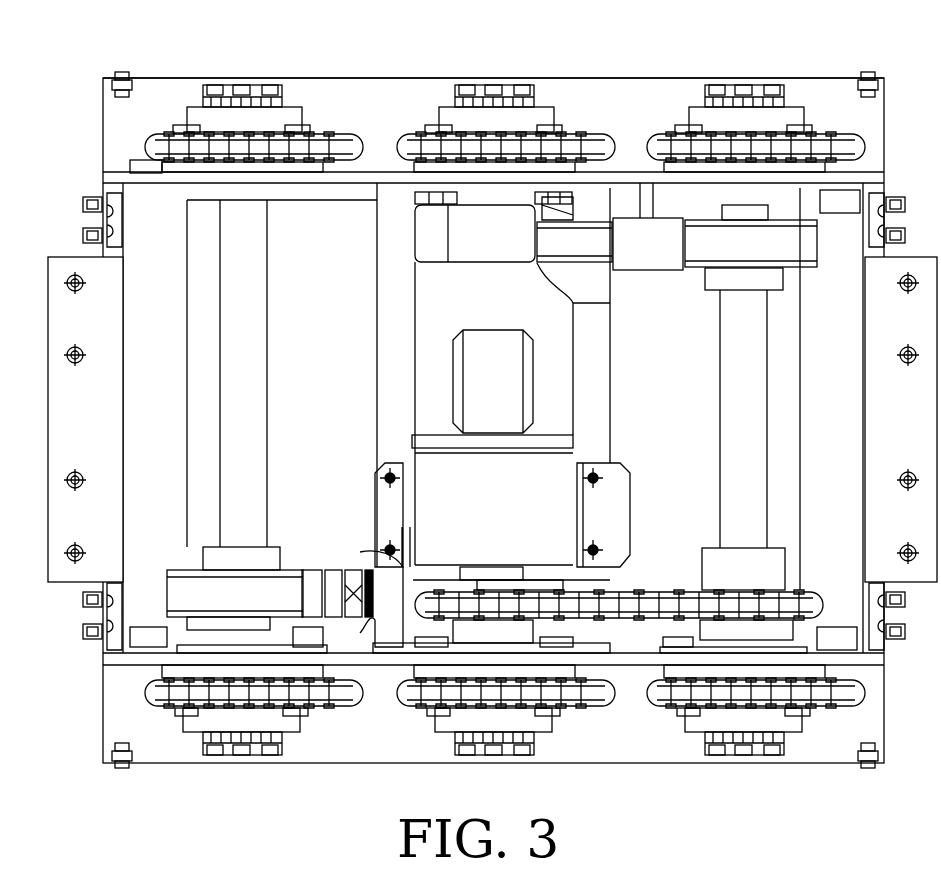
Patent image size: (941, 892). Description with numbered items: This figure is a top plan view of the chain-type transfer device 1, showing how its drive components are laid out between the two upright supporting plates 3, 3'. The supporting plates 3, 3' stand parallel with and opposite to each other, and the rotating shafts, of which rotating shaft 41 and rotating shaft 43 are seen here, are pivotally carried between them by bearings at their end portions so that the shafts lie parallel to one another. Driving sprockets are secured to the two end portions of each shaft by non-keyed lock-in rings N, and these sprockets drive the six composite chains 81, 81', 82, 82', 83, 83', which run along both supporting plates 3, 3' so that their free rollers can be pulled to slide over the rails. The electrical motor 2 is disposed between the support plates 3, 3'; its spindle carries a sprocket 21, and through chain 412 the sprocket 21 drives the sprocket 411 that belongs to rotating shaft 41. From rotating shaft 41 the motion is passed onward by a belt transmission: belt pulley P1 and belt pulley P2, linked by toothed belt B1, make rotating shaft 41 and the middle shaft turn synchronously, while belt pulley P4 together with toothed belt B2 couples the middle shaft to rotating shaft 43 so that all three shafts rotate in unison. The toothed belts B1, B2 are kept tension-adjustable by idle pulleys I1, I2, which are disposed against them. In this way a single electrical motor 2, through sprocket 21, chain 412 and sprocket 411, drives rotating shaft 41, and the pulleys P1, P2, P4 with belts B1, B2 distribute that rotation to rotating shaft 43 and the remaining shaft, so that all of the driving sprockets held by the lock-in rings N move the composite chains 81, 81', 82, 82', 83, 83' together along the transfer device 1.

The chain-type transfer device 1 is at (664, 60).
The non-keyed lock-in rings N is at (257, 113).
The electrical motor 2 is at (432, 298).
The upright supporting plate 3 is at (519, 667).
The upright supporting plate 3' is at (520, 175).
The sprocket 21 is at (452, 595).
The rotating shaft 41 is at (737, 381).
The sprocket 411 is at (795, 595).
The chain 412 is at (652, 592).
The rotating shaft 43 is at (252, 372).
The composite chain 81 is at (756, 717).
The composite chain 82 is at (506, 736).
The composite chain 83 is at (254, 736).
The composite chain 81' is at (756, 125).
The composite chain 82' is at (512, 105).
The composite chain 83' is at (250, 105).
The belt pulley P1 is at (810, 265).
The belt pulley P2 is at (560, 268).
The belt pulley P4 is at (177, 567).
The toothed belt B1 is at (702, 248).
The toothed belt B2 is at (180, 590).
The idle pulley I1 is at (641, 263).
The idle pulley I2 is at (303, 570).